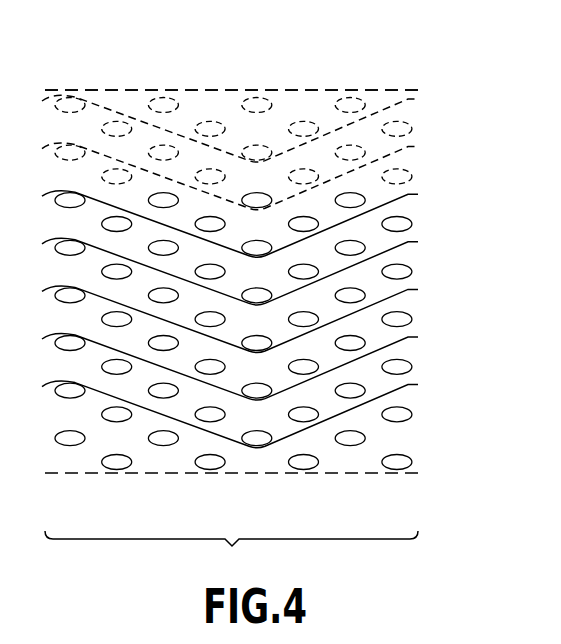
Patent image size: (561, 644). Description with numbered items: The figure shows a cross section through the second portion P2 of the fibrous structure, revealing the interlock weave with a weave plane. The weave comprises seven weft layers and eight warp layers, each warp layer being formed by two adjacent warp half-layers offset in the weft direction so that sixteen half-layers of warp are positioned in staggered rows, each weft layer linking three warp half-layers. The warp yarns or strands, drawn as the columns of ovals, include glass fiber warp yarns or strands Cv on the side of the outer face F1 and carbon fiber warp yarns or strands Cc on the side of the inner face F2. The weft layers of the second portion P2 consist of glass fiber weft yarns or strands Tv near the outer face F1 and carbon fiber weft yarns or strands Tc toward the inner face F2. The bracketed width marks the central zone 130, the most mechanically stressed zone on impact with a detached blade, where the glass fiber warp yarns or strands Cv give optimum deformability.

The second portion P2 is at (82, 84).
The outer face F1 is at (252, 92).
The inner face F2 is at (338, 474).
The glass fiber warp yarns or strands Cv is at (212, 126).
The carbon fiber warp yarns or strands Cc is at (117, 270).
The glass fiber weft yarns or strands Tv is at (427, 102).
The carbon fiber weft yarns or strands Tc is at (427, 197).
The central zone 130 is at (231, 552).